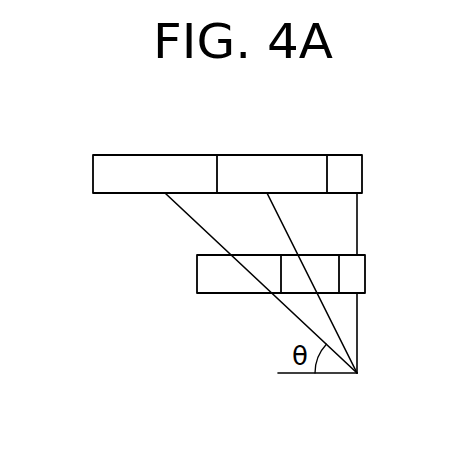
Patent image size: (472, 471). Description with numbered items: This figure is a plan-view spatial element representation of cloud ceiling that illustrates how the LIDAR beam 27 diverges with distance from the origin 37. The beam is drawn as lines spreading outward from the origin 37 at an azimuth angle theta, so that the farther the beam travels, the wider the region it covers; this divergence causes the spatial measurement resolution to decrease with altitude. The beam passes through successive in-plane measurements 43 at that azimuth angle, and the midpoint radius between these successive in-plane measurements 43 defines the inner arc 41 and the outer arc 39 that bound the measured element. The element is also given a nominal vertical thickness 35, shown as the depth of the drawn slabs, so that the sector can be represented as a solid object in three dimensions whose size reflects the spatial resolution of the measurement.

The LIDAR beam 27 is at (175, 208).
The nominal vertical thickness 35 is at (93, 173).
The origin 37 is at (357, 373).
The outer arc 39 is at (221, 155).
The inner arc 41 is at (330, 155).
The in-plane measurements 43 is at (267, 193).